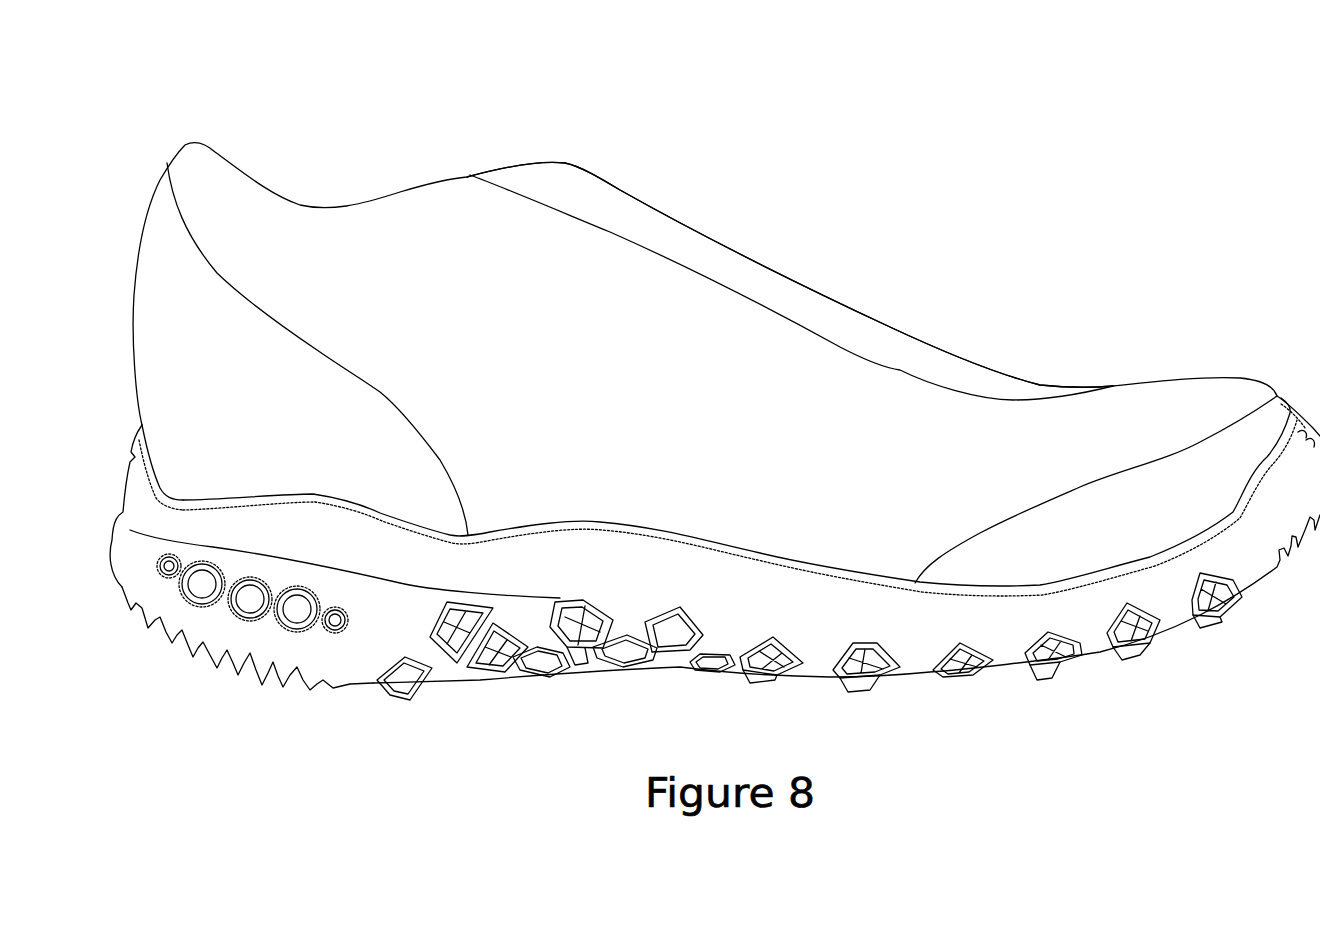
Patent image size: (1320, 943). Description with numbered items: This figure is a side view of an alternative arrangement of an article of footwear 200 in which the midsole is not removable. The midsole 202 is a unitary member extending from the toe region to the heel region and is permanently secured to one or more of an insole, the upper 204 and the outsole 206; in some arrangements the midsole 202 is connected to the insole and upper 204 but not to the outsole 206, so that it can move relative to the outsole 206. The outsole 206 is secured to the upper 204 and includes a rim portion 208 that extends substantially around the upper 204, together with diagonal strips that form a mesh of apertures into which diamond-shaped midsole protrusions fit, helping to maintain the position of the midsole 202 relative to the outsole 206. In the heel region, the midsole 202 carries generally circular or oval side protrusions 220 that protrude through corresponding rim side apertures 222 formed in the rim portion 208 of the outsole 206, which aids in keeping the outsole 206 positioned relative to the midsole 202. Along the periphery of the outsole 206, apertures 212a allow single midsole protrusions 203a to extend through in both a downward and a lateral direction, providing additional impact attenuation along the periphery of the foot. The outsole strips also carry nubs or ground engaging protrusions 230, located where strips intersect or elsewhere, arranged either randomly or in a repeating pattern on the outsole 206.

The article of footwear 200 is at (412, 129).
The midsole 202 is at (623, 670).
The midsole protrusion 203a is at (753, 657).
The upper 204 is at (760, 285).
The outsole 206 is at (1090, 618).
The rim portion 208 is at (125, 547).
The outsole aperture 212a is at (793, 675).
The side protrusion 220 is at (203, 589).
The rim side aperture 222 is at (180, 603).
The ground engaging protrusion 230 is at (578, 672).